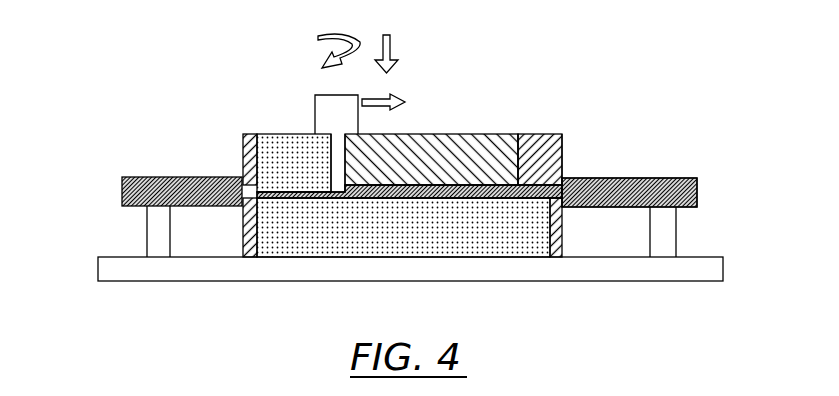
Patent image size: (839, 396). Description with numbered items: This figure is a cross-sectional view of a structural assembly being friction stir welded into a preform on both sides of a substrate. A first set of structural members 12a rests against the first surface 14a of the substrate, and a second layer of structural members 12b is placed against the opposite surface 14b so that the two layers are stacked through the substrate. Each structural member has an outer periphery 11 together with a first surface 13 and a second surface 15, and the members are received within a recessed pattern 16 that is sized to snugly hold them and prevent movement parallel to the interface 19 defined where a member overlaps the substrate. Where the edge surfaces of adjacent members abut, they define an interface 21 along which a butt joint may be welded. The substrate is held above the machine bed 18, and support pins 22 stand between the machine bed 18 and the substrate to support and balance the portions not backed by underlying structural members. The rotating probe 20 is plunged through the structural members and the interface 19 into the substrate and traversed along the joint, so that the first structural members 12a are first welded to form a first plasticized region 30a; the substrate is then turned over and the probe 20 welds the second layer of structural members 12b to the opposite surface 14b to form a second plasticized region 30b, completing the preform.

The outer periphery 11 is at (566, 145).
The structural members 12a is at (252, 242).
The second layer of structural members 12b is at (253, 148).
The first surface 13 is at (596, 178).
The first surface 14a is at (613, 208).
The opposite surface 14b is at (578, 178).
The second surface 15 is at (460, 135).
The recessed pattern 16 is at (238, 176).
The machine bed 18 is at (710, 265).
The interface 19 is at (405, 198).
The probe 20 is at (315, 95).
The interface 21 is at (518, 170).
The support pins 22 is at (675, 232).
The first plasticized region 30a is at (308, 238).
The second plasticized region 30b is at (290, 133).